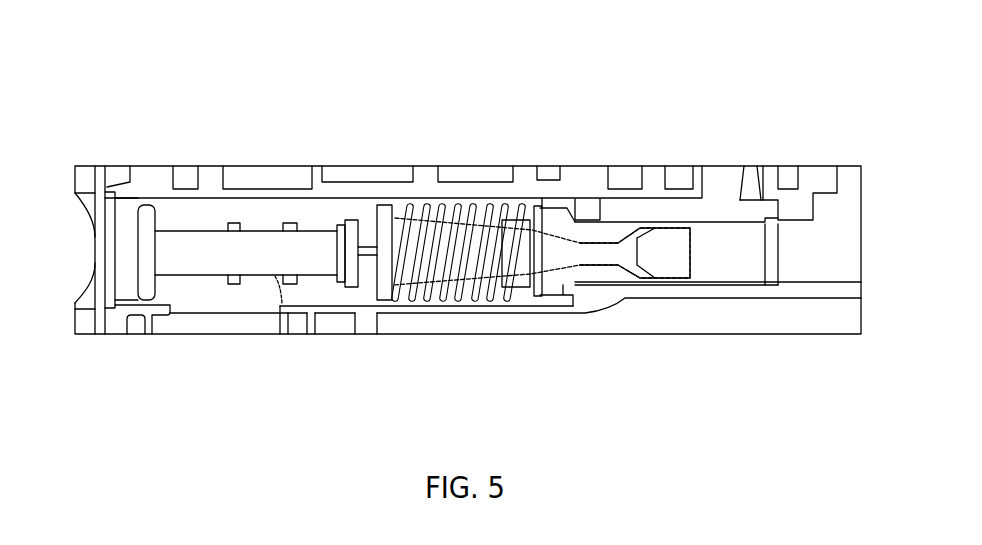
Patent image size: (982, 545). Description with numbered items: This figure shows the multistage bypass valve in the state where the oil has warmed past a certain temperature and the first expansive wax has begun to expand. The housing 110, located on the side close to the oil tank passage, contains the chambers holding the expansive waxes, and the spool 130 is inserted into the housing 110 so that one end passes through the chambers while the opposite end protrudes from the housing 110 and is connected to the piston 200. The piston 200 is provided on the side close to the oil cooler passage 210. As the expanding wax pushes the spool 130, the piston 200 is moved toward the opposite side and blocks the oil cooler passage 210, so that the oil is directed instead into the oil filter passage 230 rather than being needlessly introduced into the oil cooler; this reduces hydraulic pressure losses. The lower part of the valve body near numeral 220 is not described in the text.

The housing 110 is at (210, 240).
The spool 130 is at (368, 248).
The piston 200 is at (590, 255).
The oil cooler passage 210 is at (737, 178).
The lower housing 220 is at (223, 316).
The oil filter passage 230 is at (828, 233).